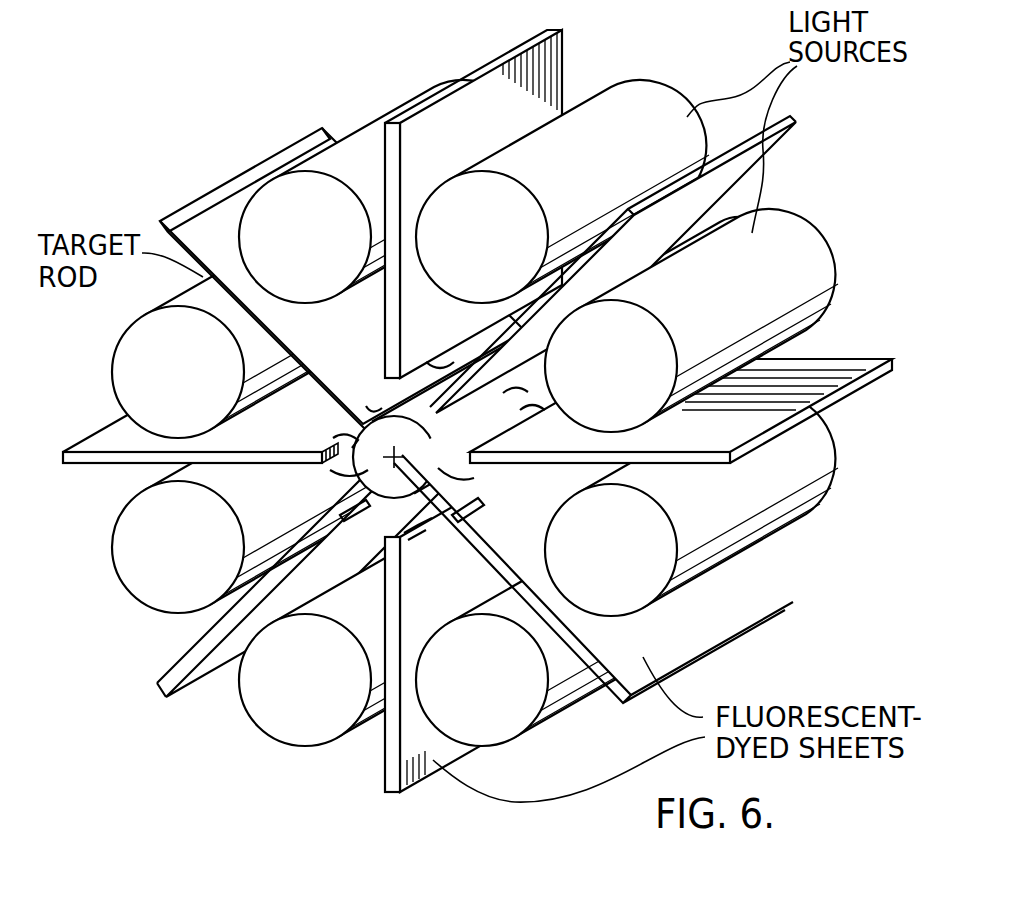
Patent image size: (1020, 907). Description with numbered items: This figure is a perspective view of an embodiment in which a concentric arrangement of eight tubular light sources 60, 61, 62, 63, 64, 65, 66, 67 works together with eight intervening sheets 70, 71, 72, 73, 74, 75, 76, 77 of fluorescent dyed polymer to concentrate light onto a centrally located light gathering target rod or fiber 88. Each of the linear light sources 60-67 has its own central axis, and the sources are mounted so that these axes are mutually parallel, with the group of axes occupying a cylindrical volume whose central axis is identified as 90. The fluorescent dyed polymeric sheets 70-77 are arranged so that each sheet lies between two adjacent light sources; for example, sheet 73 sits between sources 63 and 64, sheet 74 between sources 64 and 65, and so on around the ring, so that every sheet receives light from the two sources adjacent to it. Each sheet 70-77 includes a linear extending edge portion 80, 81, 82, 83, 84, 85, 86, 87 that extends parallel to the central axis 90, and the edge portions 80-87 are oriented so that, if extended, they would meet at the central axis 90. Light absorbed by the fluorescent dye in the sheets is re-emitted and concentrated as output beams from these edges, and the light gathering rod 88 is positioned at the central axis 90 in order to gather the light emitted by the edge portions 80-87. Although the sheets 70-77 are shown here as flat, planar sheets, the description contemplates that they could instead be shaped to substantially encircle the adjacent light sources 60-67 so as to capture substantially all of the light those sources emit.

The tubular light source 60 is at (813, 433).
The tubular light source 61 is at (826, 254).
The tubular light source 62 is at (680, 78).
The tubular light source 63 is at (373, 152).
The tubular light source 64 is at (128, 380).
The tubular light source 65 is at (150, 592).
The tubular light source 66 is at (313, 733).
The tubular light source 67 is at (515, 713).
The fluorescent dyed polymeric sheet 70 is at (860, 362).
The fluorescent dyed polymeric sheet 71 is at (790, 133).
The fluorescent dyed polymeric sheet 72 is at (530, 93).
The fluorescent dyed polymeric sheet 73 is at (313, 140).
The fluorescent dyed polymeric sheet 74 is at (113, 457).
The fluorescent dyed polymeric sheet 75 is at (200, 673).
The fluorescent dyed polymeric sheet 76 is at (417, 787).
The fluorescent dyed polymeric sheet 77 is at (787, 594).
The linear extending edge portion 80 is at (530, 410).
The linear extending edge portion 81 is at (515, 388).
The linear extending edge portion 82 is at (440, 366).
The linear extending edge portion 83 is at (373, 408).
The linear extending edge portion 84 is at (300, 470).
The linear extending edge portion 85 is at (358, 513).
The linear extending edge portion 86 is at (422, 520).
The linear extending edge portion 87 is at (483, 507).
The light gathering target rod 88 is at (352, 428).
The central axis 90 is at (453, 480).